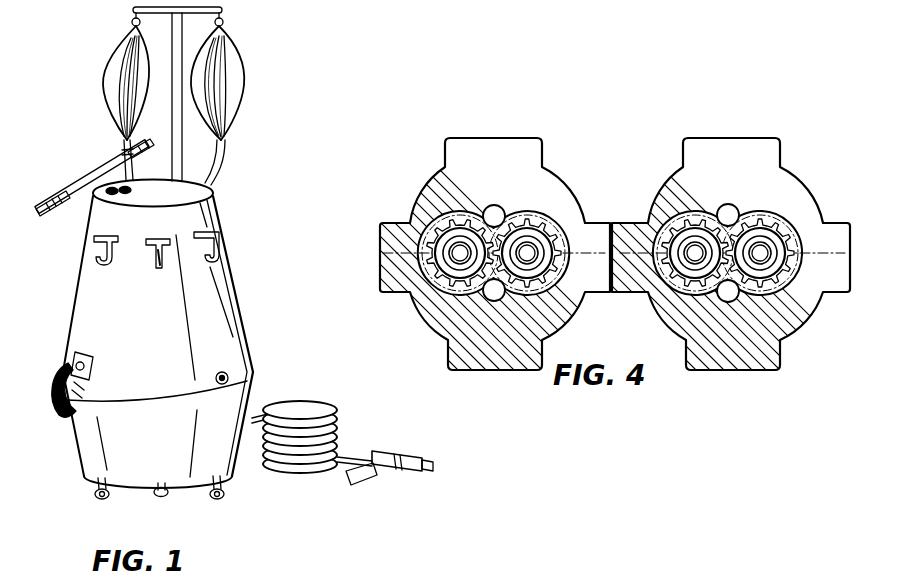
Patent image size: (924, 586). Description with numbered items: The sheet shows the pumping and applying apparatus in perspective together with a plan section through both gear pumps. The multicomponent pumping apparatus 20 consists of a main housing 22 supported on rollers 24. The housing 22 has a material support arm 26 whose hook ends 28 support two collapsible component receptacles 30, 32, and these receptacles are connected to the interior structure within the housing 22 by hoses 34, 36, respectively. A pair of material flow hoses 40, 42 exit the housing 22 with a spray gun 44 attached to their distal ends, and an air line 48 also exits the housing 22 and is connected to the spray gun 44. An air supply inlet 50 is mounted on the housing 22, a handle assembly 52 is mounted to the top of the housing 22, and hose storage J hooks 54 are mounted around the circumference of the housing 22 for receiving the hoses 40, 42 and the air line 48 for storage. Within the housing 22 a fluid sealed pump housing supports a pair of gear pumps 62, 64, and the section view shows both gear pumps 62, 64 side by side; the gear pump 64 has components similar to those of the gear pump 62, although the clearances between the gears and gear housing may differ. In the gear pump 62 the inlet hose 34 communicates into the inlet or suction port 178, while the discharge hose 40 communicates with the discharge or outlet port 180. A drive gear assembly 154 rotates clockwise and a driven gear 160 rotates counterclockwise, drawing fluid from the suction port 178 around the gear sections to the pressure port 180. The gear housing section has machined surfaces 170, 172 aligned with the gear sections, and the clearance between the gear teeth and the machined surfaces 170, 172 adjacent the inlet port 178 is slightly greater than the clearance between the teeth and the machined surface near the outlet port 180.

In FIG. 1, the multicomponent pumping apparatus 20 is at (227, 271).
In FIG. 1, the main housing 22 is at (153, 334).
In FIG. 1, the rollers 24 is at (107, 498).
In FIG. 1, the material support arm 26 is at (223, 24).
In FIG. 1, the hook ends 28 is at (132, 24).
In FIG. 1, the collapsible component receptacle 30 is at (103, 78).
In FIG. 1, the collapsible component receptacle 32 is at (243, 78).
In FIG. 1, the hose 34 is at (90, 197).
In FIG. 1, the hose 36 is at (220, 170).
In FIG. 1, the material flow hose 40 is at (76, 370).
In FIG. 1, the material flow hose 42 is at (66, 366).
In FIG. 1, the spray gun 44 is at (379, 452).
In FIG. 1, the air line 48 is at (80, 391).
In FIG. 1, the air supply inlet 50 is at (228, 372).
In FIG. 1, the handle assembly 52 is at (50, 215).
In FIG. 1, the hose storage J hooks 54 is at (160, 267).
In FIG. 4, the gear pump 62 is at (480, 218).
In FIG. 4, the gear pump 64 is at (729, 114).
In FIG. 4, the drive gear assembly 154 is at (474, 227).
In FIG. 4, the driven gear 160 is at (434, 190).
In FIG. 4, the machined surface 170 is at (549, 229).
In FIG. 4, the machined surface 172 is at (420, 240).
In FIG. 4, the inlet or suction port 178 is at (498, 206).
In FIG. 4, the discharge or outlet port 180 is at (489, 297).